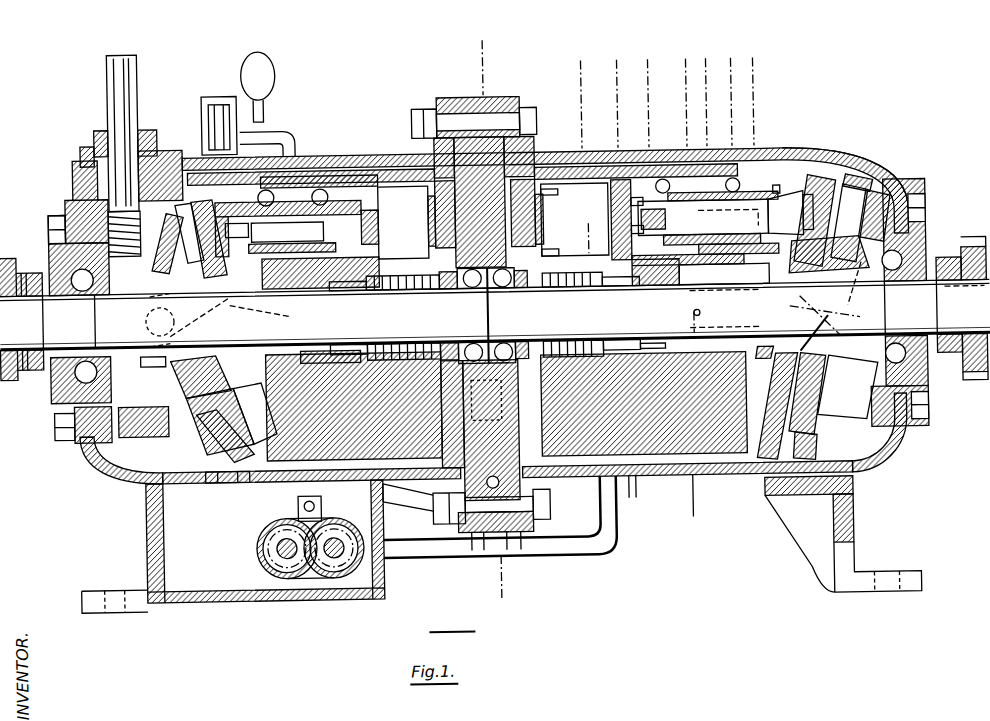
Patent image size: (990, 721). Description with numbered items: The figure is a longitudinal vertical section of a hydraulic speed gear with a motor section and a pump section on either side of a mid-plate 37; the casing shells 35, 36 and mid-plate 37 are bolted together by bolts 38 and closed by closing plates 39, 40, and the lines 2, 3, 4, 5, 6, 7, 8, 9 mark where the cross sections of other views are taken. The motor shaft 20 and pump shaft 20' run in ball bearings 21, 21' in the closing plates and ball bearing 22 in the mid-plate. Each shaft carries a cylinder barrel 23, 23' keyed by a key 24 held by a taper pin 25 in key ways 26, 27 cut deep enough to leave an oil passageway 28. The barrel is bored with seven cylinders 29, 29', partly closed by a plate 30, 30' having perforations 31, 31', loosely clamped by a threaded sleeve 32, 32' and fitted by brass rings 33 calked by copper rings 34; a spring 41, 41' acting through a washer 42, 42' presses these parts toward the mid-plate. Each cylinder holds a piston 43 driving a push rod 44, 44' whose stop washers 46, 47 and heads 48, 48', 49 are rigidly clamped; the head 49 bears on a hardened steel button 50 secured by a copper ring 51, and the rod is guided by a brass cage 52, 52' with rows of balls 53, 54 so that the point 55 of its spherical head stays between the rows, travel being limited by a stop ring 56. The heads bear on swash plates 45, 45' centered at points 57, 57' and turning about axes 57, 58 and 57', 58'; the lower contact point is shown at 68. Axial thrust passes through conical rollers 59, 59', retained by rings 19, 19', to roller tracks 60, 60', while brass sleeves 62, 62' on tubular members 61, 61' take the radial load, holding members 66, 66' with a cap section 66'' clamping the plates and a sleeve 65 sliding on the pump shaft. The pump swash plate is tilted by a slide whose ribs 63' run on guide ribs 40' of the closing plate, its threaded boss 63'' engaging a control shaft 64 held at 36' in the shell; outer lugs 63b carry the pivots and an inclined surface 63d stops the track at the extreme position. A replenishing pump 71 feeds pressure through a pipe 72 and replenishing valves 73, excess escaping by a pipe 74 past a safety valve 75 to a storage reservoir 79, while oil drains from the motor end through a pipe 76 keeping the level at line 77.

The section line 2 is at (496, 320).
The section line 3 is at (583, 156).
The section line 4 is at (617, 104).
The section line 5 is at (648, 103).
The section line 6 is at (693, 195).
The section line 7 is at (706, 102).
The section line 8 is at (731, 102).
The section line 9 is at (753, 101).
The retaining ring 19 is at (860, 191).
The retaining ring 19' is at (497, 411).
The motor shaft 20 is at (495, 316).
The pump shaft 20' is at (35, 318).
The ball bearing 21 is at (905, 282).
The ball bearing 21' is at (79, 309).
The ball bearing 22 is at (486, 316).
The cylinder barrel 23 is at (378, 544).
The cylinder barrel 23' is at (234, 491).
The key 24 is at (713, 308).
The taper pin 25 is at (699, 314).
The key way 26 is at (730, 270).
The key way 27 is at (757, 351).
The passageway 28 is at (647, 351).
The cylinders 29 is at (575, 219).
The pump cylinders 29' is at (358, 223).
The plate 30 is at (536, 184).
The plate 30' is at (419, 183).
The perforations 31 is at (527, 219).
The perforations 31' is at (381, 222).
The threaded sleeve 32 is at (535, 314).
The threaded sleeve 32' is at (450, 316).
The brass rings 33 is at (553, 244).
The copper rings 34 is at (553, 199).
The casing shell 35 is at (822, 155).
The casing shell 36 is at (545, 161).
The control shaft holder 36' is at (130, 129).
The mid-plate 37 is at (500, 97).
The bolts 38 is at (523, 120).
The closing plate 39 is at (885, 440).
The closing plate 40 is at (463, 450).
The guide ribs 40' is at (124, 196).
The spring 41 is at (572, 314).
The spring 41' is at (403, 317).
The washer 42 is at (619, 313).
The washer 42' is at (348, 318).
The piston 43 is at (620, 182).
The push rod 44 is at (708, 218).
The push rod 44' is at (313, 231).
The swash plate 45 is at (814, 211).
The swash plate 45' is at (191, 207).
The stop washer 46 is at (780, 177).
The stop washer 47 is at (814, 202).
The head 48 is at (788, 213).
The head 48' is at (288, 228).
The head 49 is at (653, 217).
The hardened steel button 50 is at (633, 226).
The calked copper ring 51 is at (633, 203).
The brass cage 52 is at (739, 243).
The ball cage 52' is at (307, 177).
The balls 53 is at (704, 176).
The balls 54 is at (650, 182).
The center point 55 is at (728, 221).
The stop ring 56 is at (706, 495).
The swash plate center 57 is at (825, 303).
The swash plate center 57' is at (260, 312).
The axis point 58 is at (828, 315).
The axis point 58' is at (200, 317).
The conical rollers 59 is at (882, 191).
The conical rollers 59' is at (214, 214).
The roller track 60 is at (822, 445).
The roller track 60' is at (255, 417).
The tubular member 61 is at (189, 380).
The tubular member 61' is at (850, 283).
The brass sleeve 62 is at (833, 374).
The brass sleeve 62' is at (220, 421).
The ribs 63' is at (111, 438).
The threaded boss 63'' is at (39, 239).
The outer lugs 63b is at (156, 371).
The inclined surface 63d is at (172, 208).
The control shaft 64 is at (111, 103).
The sleeve 65 is at (181, 320).
The holding member 66 is at (819, 254).
The holding member 66' is at (312, 273).
The cap section 66'' is at (331, 381).
The contact point 68 is at (768, 411).
The replenishing pump 71 is at (250, 540).
The pipe 72 is at (410, 502).
The replenishing valve 73 is at (520, 460).
The pipe 74 is at (298, 135).
The safety valve 75 is at (205, 122).
The drain pipe 76 is at (612, 545).
The oil level line 77 is at (634, 487).
The storage reservoir 79 is at (257, 87).